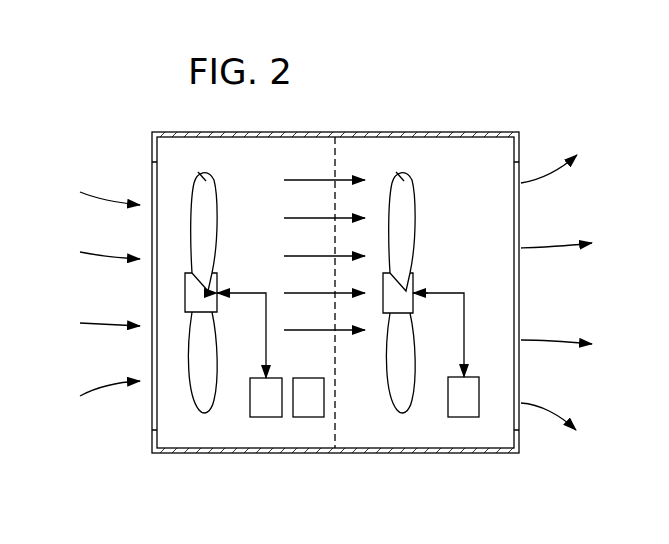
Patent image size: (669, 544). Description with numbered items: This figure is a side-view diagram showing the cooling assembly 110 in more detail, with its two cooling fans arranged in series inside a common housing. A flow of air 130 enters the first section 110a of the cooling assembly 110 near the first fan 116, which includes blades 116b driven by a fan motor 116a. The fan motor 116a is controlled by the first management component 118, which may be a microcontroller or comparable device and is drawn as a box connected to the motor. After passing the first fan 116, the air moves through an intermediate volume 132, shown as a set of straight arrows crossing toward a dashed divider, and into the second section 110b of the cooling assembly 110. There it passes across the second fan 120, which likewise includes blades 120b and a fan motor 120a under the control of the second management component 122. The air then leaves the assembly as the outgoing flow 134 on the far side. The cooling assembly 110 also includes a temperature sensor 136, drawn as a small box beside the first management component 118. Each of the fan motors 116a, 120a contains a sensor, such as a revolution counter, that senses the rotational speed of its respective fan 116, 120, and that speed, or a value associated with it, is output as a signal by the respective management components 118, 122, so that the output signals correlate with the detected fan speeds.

The cooling assembly 110 is at (455, 100).
The first section 110a is at (223, 443).
The second section 110b is at (415, 432).
The first fan 116 is at (183, 252).
The fan motor 116a is at (185, 300).
The blades 116b is at (203, 226).
The first management component 118 is at (262, 416).
The second fan 120 is at (424, 252).
The fan motor 120a is at (416, 275).
The blades 120b is at (417, 190).
The second management component 122 is at (463, 408).
The flow of air 130 is at (105, 381).
The intermediate volume 132 is at (262, 208).
The outlet air flow 134 is at (545, 402).
The temperature sensor 136 is at (305, 416).